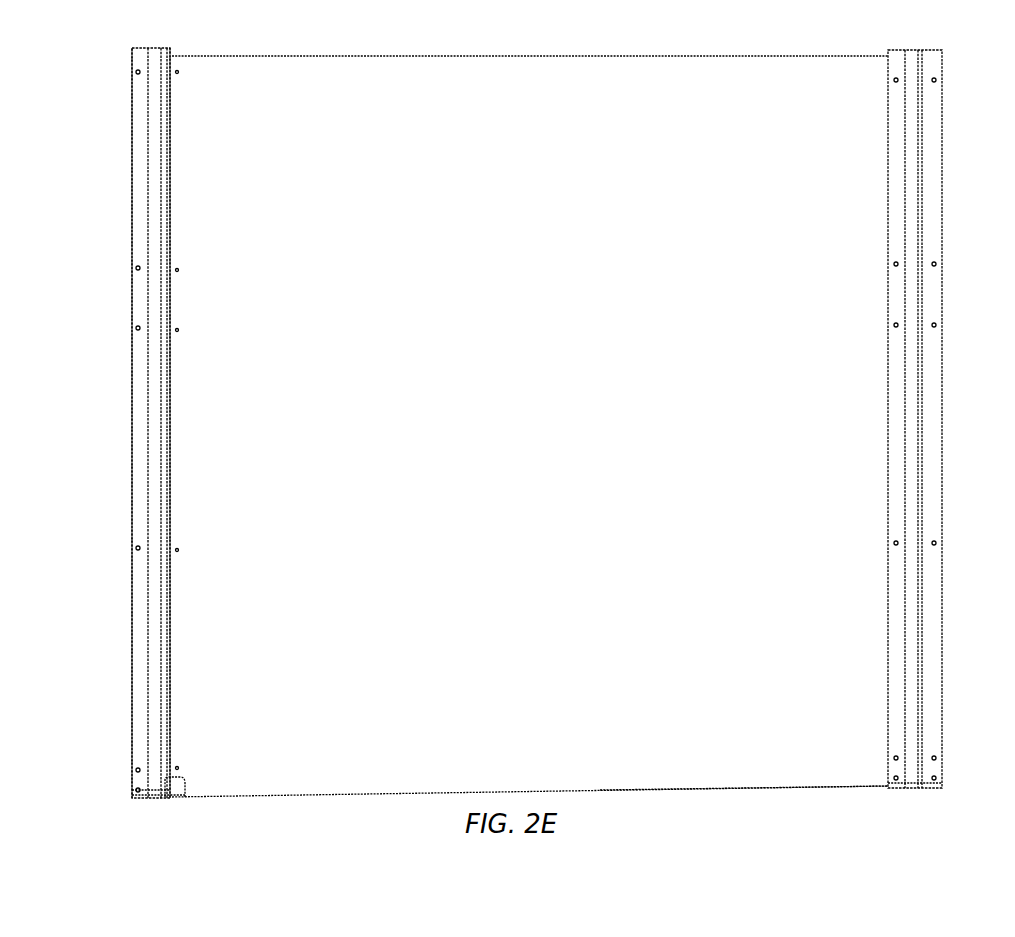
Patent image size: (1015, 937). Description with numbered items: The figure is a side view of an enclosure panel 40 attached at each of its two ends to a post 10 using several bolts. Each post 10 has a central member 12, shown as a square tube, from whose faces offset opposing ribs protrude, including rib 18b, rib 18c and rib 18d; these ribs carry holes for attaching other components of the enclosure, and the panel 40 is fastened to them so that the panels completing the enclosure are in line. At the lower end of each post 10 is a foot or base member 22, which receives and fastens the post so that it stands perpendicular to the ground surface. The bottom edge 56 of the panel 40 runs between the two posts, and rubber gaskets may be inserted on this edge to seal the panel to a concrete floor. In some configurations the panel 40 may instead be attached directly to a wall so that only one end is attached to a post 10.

The post 10 is at (528, 433).
The central member 12 is at (528, 433).
The rib 18b is at (161, 798).
The rib 18c is at (133, 582).
The rib 18d is at (172, 50).
The foot or base member 22 is at (124, 797).
The enclosure panel 40 is at (320, 796).
The bottom edge 56 is at (803, 786).